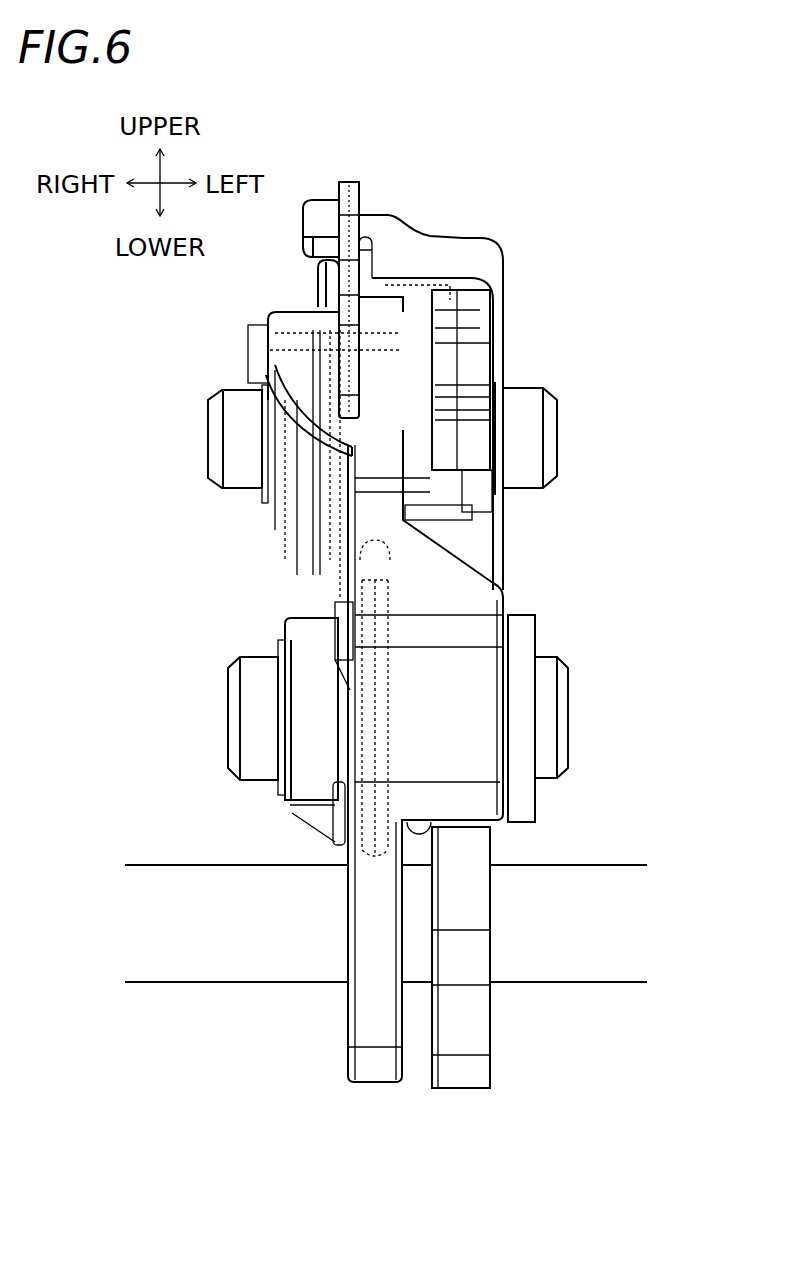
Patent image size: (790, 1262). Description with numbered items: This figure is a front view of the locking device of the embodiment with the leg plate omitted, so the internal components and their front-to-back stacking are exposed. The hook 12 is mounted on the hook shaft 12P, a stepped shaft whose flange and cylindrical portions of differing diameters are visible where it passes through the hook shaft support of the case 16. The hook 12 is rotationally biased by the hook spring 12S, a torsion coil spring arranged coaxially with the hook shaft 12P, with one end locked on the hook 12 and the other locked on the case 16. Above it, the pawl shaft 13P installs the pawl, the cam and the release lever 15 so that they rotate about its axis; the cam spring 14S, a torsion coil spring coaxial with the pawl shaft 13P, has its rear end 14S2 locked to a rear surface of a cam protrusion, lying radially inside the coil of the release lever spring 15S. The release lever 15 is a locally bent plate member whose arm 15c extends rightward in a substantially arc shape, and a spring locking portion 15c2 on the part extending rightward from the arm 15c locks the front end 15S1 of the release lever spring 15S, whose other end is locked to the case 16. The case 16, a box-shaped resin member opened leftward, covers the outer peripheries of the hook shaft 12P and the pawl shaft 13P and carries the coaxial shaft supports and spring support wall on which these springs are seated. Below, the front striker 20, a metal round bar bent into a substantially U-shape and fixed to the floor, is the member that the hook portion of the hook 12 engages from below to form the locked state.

The hook 12 is at (462, 1090).
The hook shaft 12P is at (569, 720).
The hook spring 12S is at (388, 600).
The pawl shaft 13P is at (557, 437).
The cam spring 14S is at (388, 400).
The rear end of the cam spring 14S2 is at (445, 283).
The release lever 15 is at (431, 372).
The arm 15c is at (418, 228).
The spring locking portion 15c2 is at (318, 200).
The release lever spring 15S is at (318, 292).
The front end of the release lever spring 15S1 is at (352, 182).
The case 16 is at (503, 600).
The front striker 20 is at (598, 865).